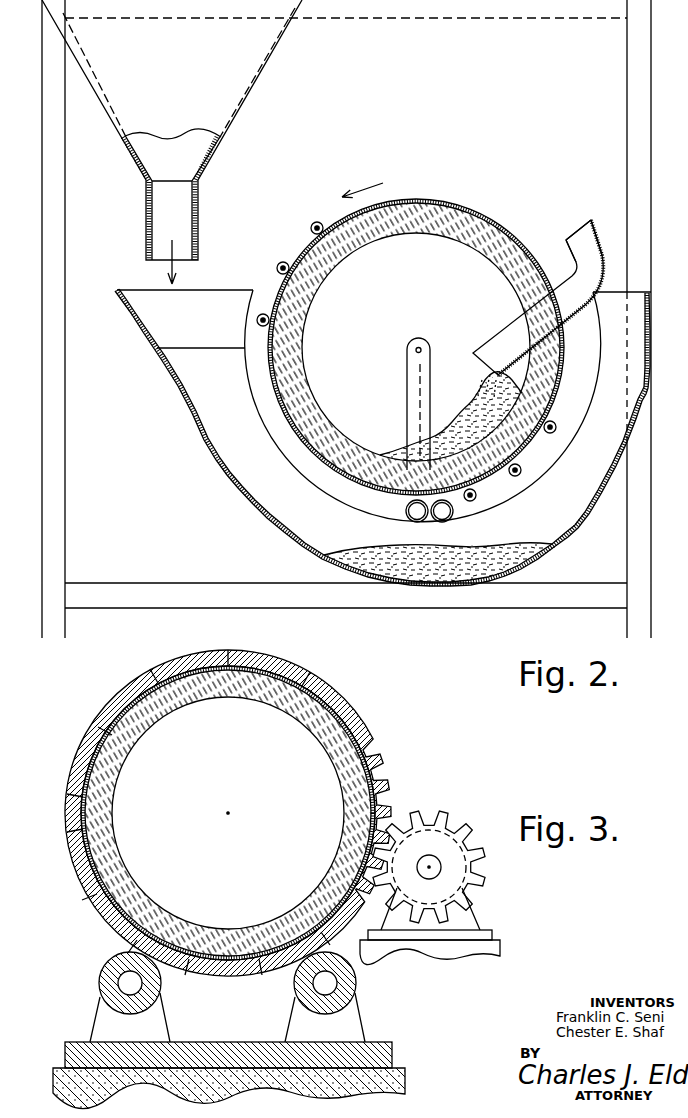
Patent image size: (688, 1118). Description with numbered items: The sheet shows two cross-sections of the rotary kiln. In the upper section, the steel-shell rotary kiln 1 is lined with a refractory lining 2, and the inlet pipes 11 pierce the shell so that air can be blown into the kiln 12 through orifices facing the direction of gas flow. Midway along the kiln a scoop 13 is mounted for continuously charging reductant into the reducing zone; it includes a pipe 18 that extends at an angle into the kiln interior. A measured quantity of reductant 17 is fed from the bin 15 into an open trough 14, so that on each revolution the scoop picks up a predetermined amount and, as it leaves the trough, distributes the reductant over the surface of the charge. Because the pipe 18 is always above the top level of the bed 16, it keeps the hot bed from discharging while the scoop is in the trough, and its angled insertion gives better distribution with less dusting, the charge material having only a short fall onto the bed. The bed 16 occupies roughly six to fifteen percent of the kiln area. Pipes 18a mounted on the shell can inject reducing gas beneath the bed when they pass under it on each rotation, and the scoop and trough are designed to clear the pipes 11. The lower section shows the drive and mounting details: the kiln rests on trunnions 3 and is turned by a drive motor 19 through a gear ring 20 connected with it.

In FIG. 2, the steel-shell rotary kiln 1 is at (497, 226).
In FIG. 3, the steel-shell rotary kiln 1 is at (327, 718).
In FIG. 2, the refractory lining 2 is at (492, 247).
In FIG. 3, the refractory lining 2 is at (343, 747).
In FIG. 3, the trunnions 3 is at (99, 981).
In FIG. 2, the inlet pipes 11 is at (405, 510).
In FIG. 2, the kiln 12 is at (407, 388).
In FIG. 2, the scoop 13 is at (590, 220).
In FIG. 2, the open trough 14 is at (253, 513).
In FIG. 2, the bin 15 is at (267, 68).
In FIG. 2, the bed 16 is at (477, 410).
In FIG. 2, the reductant 17 is at (470, 547).
In FIG. 2, the pipe 18 is at (497, 330).
In FIG. 2, the pipes 18a is at (550, 434).
In FIG. 3, the drive motor 19 is at (442, 808).
In FIG. 3, the gear ring 20 is at (383, 757).